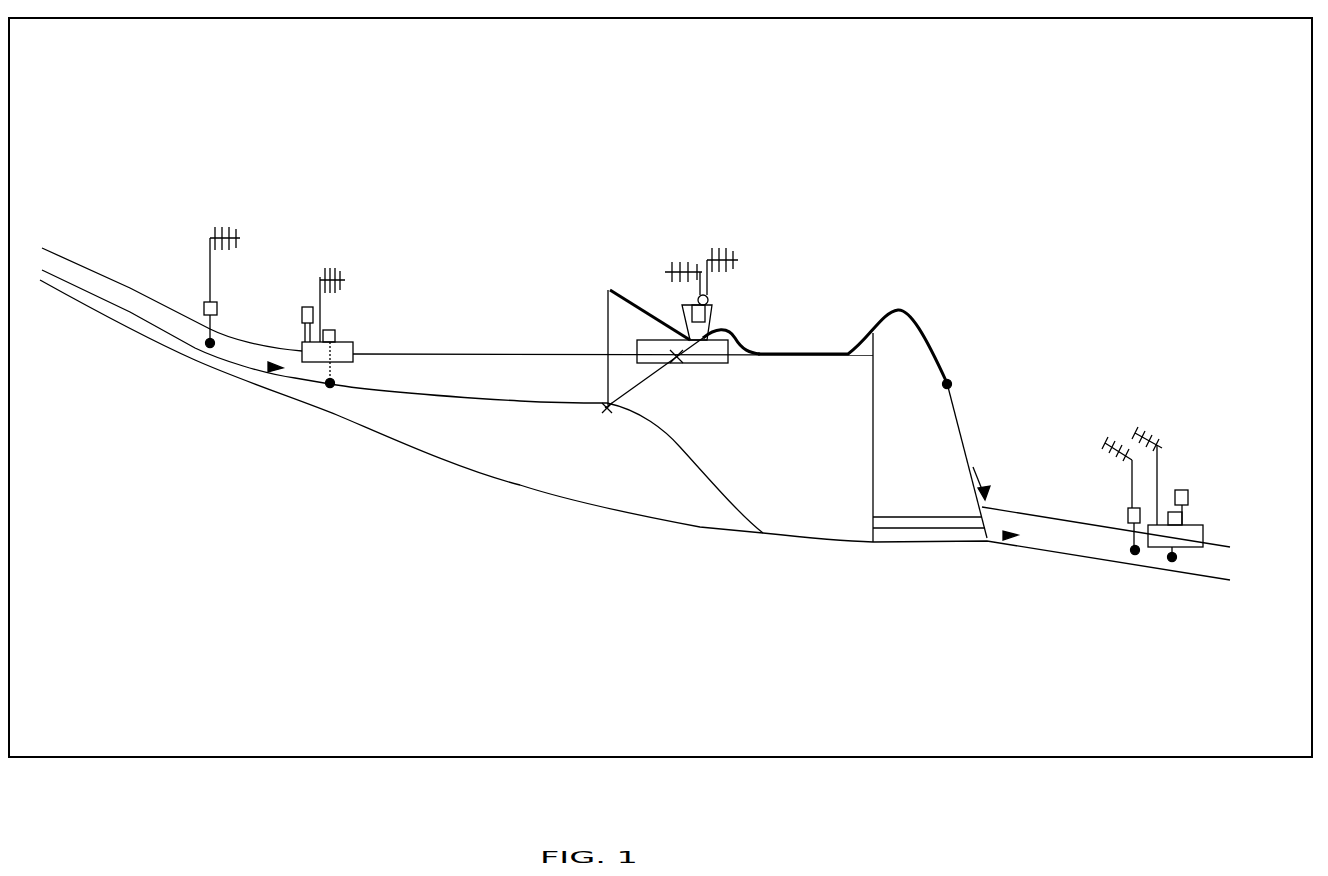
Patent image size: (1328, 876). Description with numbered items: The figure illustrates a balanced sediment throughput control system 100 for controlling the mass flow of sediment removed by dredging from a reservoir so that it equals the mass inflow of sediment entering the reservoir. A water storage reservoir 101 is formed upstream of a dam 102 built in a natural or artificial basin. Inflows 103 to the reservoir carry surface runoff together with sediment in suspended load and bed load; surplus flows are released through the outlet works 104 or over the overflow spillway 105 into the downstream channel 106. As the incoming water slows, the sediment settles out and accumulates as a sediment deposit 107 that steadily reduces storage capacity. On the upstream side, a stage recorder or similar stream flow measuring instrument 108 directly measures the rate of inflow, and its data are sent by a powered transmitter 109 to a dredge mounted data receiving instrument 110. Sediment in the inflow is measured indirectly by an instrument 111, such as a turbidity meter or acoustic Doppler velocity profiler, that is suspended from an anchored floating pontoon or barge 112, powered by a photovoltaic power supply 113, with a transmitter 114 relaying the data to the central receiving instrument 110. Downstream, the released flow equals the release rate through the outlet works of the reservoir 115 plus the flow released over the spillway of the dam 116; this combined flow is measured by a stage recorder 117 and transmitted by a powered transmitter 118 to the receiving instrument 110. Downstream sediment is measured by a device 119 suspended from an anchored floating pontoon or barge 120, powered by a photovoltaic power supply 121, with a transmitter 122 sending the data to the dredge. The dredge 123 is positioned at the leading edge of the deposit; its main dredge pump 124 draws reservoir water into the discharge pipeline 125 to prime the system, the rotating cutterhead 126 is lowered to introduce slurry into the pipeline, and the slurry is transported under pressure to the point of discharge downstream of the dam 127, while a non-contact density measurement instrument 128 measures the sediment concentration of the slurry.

The balanced sediment throughput control system 100 is at (648, 762).
The water storage reservoir 101 is at (477, 378).
The dam 102 is at (893, 385).
The inflows 103 is at (248, 358).
The outlet works 104 is at (908, 523).
The overflow spillway 105 is at (897, 330).
The downstream channel 106 is at (1057, 540).
The sediment deposit 107 is at (453, 443).
The stream flow measuring instrument 108 is at (203, 308).
The powered transmitter 109 is at (210, 240).
The dredge mounted data receiving instrument 110 is at (700, 260).
The instrument 111 is at (320, 370).
The anchored floating pontoon or barge 112 is at (355, 348).
The photovoltaic power supply 113 is at (302, 312).
The transmitter 114 is at (317, 273).
The release rate through the outlet works of the reservoir 115 is at (1003, 542).
The flow released over the spillway of the dam 116 is at (993, 480).
The stage recorder 117 is at (1127, 545).
The powered transmitter 118 is at (1105, 442).
The device 119 is at (1165, 560).
The anchored floating pontoon or barge 120 is at (1203, 535).
The photovoltaic power supply 121 is at (1188, 498).
The transmitter 122 is at (1157, 427).
The dredge 123 is at (700, 347).
The main dredge pump 124 is at (690, 363).
The discharge pipeline 125 is at (803, 353).
The rotating cutterhead 126 is at (600, 408).
The point of discharge downstream of the dam 127 is at (957, 383).
The non-contact density measurement instrument 128 is at (722, 327).